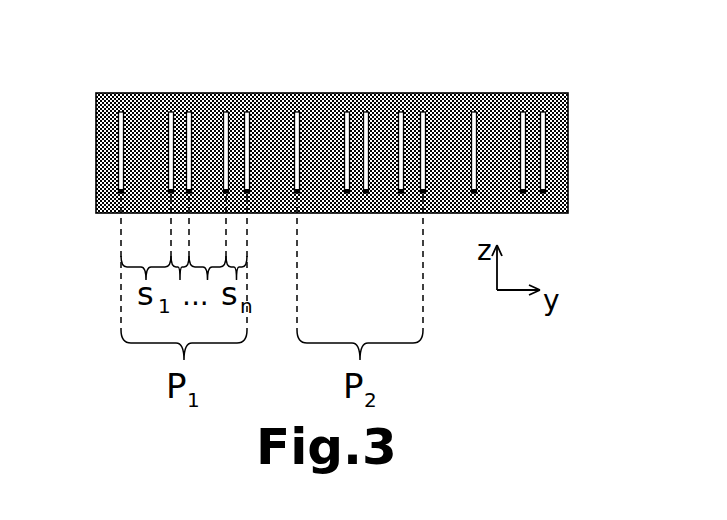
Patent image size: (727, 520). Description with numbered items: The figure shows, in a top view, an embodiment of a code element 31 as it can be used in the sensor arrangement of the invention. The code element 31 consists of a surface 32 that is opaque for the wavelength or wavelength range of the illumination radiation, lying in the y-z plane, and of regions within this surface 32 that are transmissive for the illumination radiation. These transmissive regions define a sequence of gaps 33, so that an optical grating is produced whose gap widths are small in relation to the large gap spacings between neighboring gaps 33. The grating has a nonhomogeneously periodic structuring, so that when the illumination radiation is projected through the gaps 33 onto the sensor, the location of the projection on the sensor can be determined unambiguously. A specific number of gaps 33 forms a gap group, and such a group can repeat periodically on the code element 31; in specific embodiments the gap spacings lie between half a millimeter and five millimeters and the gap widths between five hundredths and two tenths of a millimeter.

The code element 31 is at (336, 116).
The surface 32 is at (537, 103).
The gaps 33 is at (121, 118).